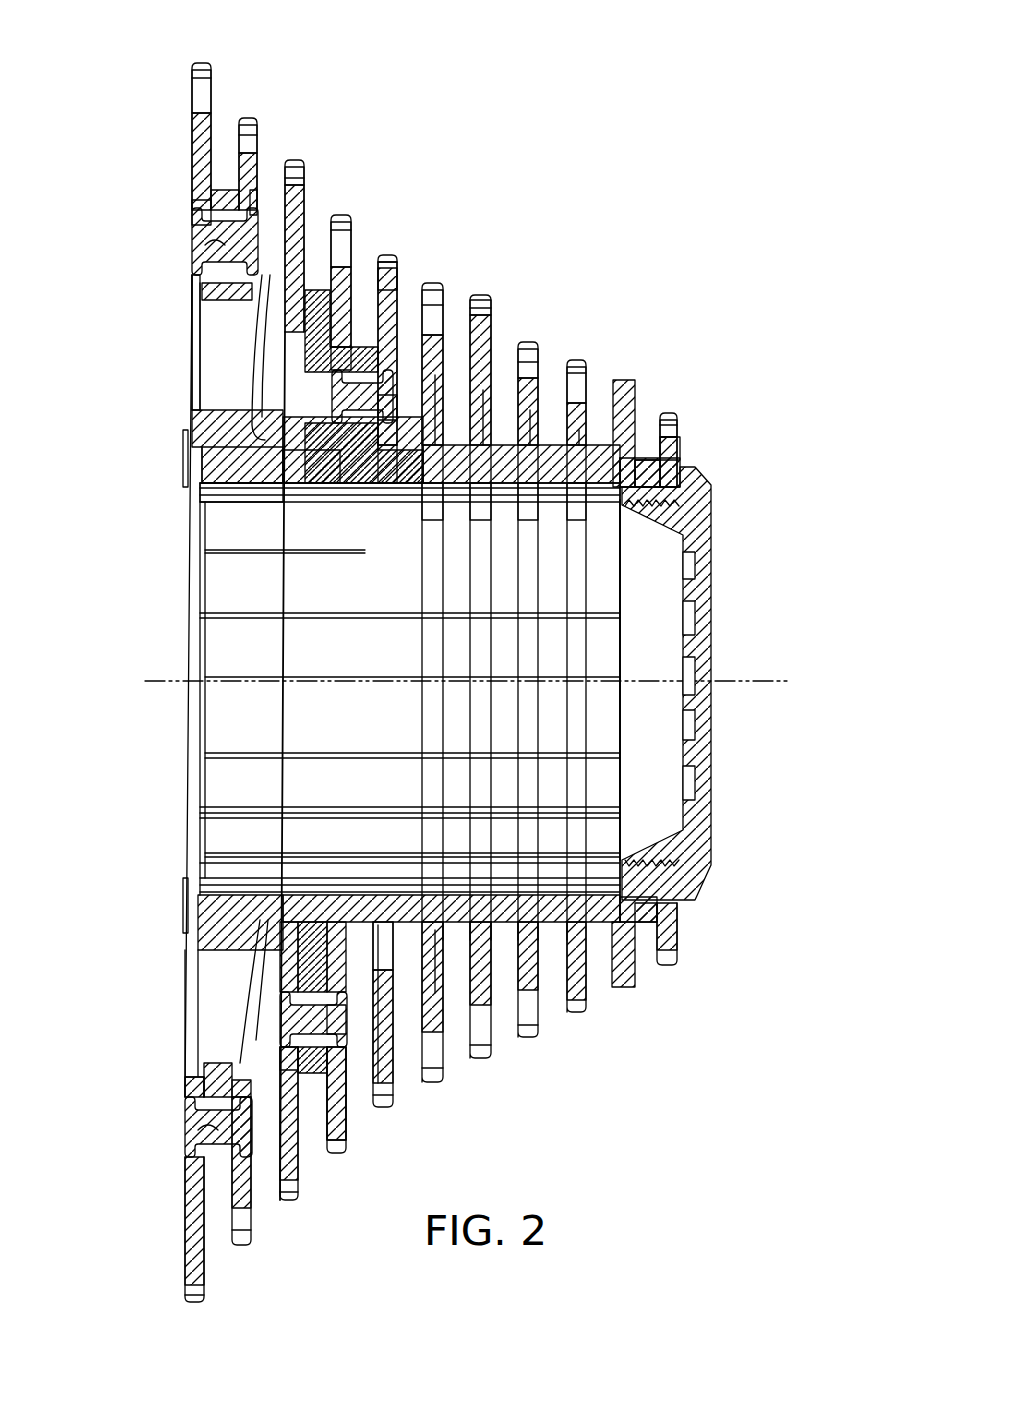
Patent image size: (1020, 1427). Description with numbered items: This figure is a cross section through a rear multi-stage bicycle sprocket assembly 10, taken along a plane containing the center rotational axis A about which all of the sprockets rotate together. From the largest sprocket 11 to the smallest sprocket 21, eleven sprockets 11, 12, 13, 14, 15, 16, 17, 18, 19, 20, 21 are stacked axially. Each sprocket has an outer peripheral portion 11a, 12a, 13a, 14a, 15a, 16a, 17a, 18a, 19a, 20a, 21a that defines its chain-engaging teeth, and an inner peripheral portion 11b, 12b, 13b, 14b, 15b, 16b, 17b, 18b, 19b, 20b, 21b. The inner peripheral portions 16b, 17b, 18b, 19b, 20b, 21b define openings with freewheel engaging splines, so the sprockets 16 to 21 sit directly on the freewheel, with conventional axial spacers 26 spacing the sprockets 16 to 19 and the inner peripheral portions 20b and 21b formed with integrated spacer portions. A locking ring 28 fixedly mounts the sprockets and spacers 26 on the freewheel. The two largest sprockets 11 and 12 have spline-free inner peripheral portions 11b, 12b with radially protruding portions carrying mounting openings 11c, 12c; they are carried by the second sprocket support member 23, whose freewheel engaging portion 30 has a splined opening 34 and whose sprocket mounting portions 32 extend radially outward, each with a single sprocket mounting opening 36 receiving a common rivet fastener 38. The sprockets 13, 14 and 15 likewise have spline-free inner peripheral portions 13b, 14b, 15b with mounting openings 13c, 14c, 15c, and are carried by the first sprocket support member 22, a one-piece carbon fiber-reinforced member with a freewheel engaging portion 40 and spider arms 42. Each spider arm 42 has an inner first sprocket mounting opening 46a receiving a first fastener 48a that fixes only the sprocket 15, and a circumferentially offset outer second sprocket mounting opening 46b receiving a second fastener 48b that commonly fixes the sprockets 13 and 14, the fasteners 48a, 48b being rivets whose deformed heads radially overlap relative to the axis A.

The bicycle sprocket assembly 10 is at (552, 168).
The sprocket 11 is at (192, 60).
The outer peripheral portion 11a is at (192, 92).
The inner peripheral portion 11b is at (200, 287).
The mounting opening 11c is at (193, 213).
The sprocket 12 is at (247, 114).
The outer peripheral portion 12a is at (240, 147).
The inner peripheral portion 12b is at (245, 304).
The mounting opening 12c is at (258, 213).
The sprocket 13 is at (297, 157).
The outer peripheral portion 13a is at (305, 175).
The inner peripheral portion 13b is at (290, 347).
The mounting opening 13c is at (298, 1028).
The sprocket 14 is at (342, 212).
The outer peripheral portion 14a is at (352, 232).
The inner peripheral portion 14b is at (335, 377).
The mounting opening 14c is at (325, 1020).
The sprocket 15 is at (391, 252).
The outer peripheral portion 15a is at (398, 272).
The inner peripheral portion 15b is at (352, 490).
The mounting opening 15c is at (380, 405).
The sprocket 16 is at (437, 280).
The outer peripheral portion 16a is at (443, 300).
The inner peripheral portion 16b is at (452, 485).
The sprocket 17 is at (486, 292).
The outer peripheral portion 17a is at (492, 312).
The inner peripheral portion 17b is at (482, 500).
The sprocket 18 is at (531, 340).
The outer peripheral portion 18a is at (538, 362).
The inner peripheral portion 18b is at (528, 500).
The sprocket 19 is at (583, 357).
The outer peripheral portion 19a is at (586, 375).
The inner peripheral portion 19b is at (578, 500).
The sprocket 20 is at (627, 377).
The outer peripheral portion 20a is at (636, 450).
The inner peripheral portion 20b is at (621, 495).
The sprocket 21 is at (672, 410).
The outer peripheral portion 21a is at (677, 427).
The inner peripheral portion 21b is at (678, 442).
The first sprocket support member 22 is at (292, 437).
The second sprocket support member 23 is at (203, 318).
The axial spacer 26 is at (455, 925).
The locking ring 28 is at (712, 522).
The freewheel engaging portion 30 is at (245, 468).
The sprocket mounting portion 32 is at (224, 190).
The splined opening 34 is at (232, 490).
The sprocket mounting opening 36 is at (215, 252).
The fastener 38 is at (200, 235).
The freewheel engaging portion 40 is at (318, 487).
The sprocket mounting portion 42 is at (317, 290).
The first sprocket mounting opening 46a is at (330, 425).
The second sprocket mounting opening 46b is at (316, 1075).
The first fastener 48a is at (350, 395).
The second fastener 48b is at (282, 1008).
The center rotational axis A is at (735, 683).